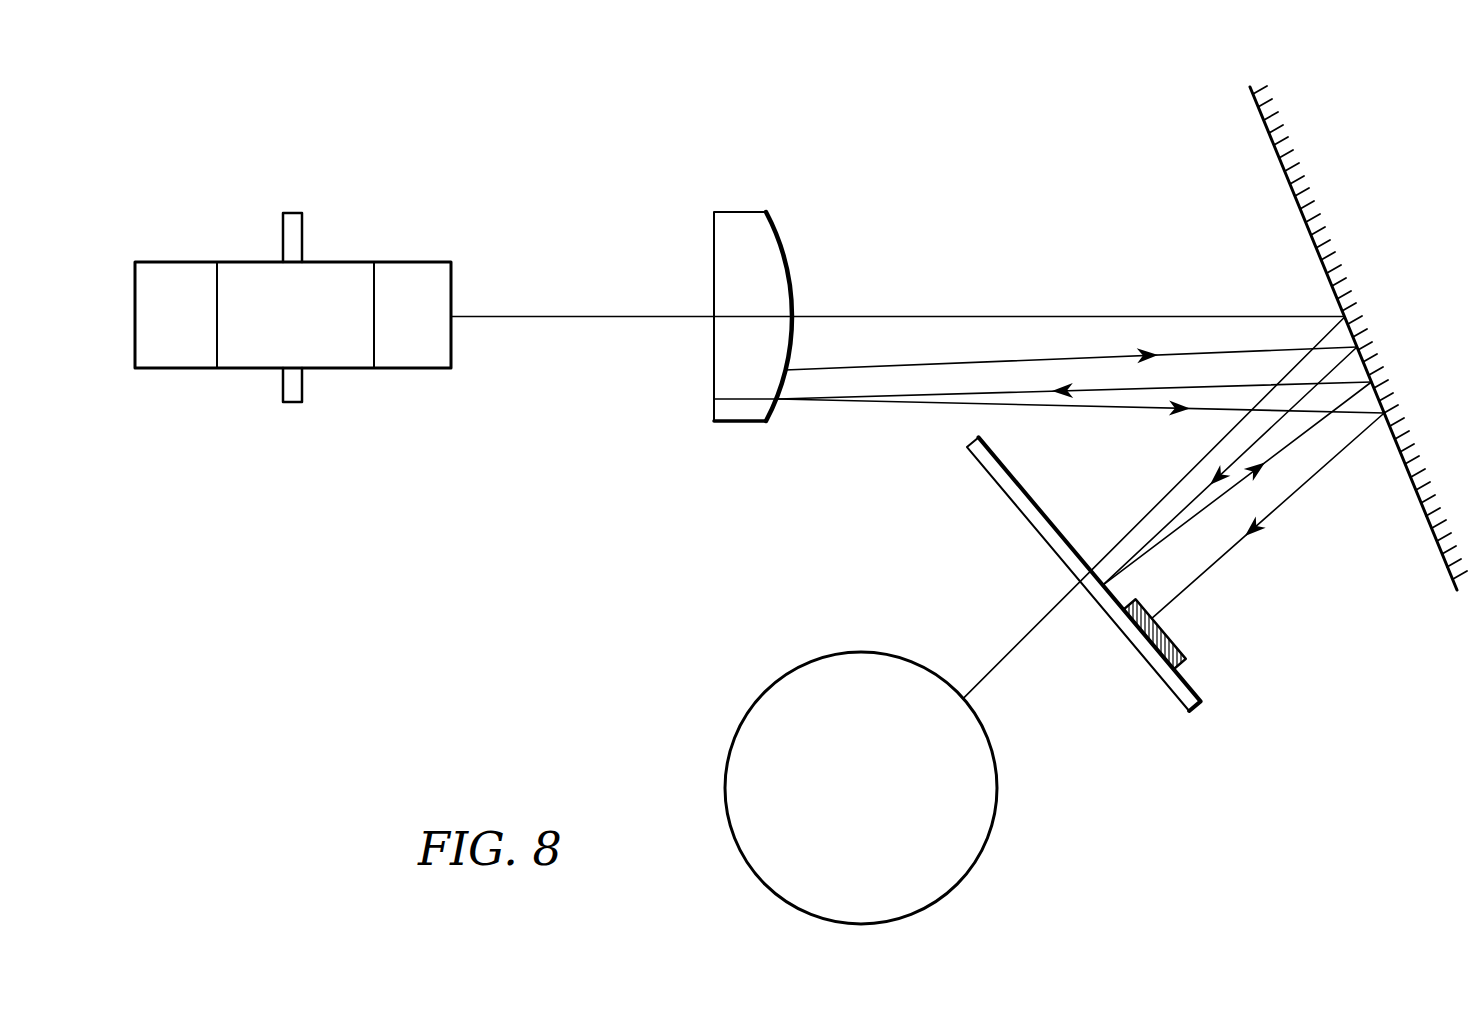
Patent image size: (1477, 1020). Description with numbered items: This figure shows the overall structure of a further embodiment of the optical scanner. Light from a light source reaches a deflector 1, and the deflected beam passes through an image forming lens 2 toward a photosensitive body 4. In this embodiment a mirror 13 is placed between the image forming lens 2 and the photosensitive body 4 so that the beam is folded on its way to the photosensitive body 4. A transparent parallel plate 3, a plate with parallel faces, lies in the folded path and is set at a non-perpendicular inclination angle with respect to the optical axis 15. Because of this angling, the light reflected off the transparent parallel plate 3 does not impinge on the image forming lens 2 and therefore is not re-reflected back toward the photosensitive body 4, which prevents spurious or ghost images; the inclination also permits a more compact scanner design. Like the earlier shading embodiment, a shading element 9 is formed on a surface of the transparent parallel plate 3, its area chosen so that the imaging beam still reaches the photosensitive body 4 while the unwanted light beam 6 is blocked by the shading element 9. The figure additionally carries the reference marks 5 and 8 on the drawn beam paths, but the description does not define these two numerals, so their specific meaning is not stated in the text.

The deflector 1 is at (343, 262).
The image forming lens 2 is at (740, 420).
The transparent parallel plate 3 is at (1200, 710).
The photosensitive body 4 is at (963, 877).
The laser beam 5 is at (585, 318).
The light beam 6 is at (883, 405).
The reflected light beam 8 is at (1022, 393).
The shading layer 9 is at (1185, 650).
The mirror 13 is at (1252, 92).
The optical axis 15 is at (1017, 648).